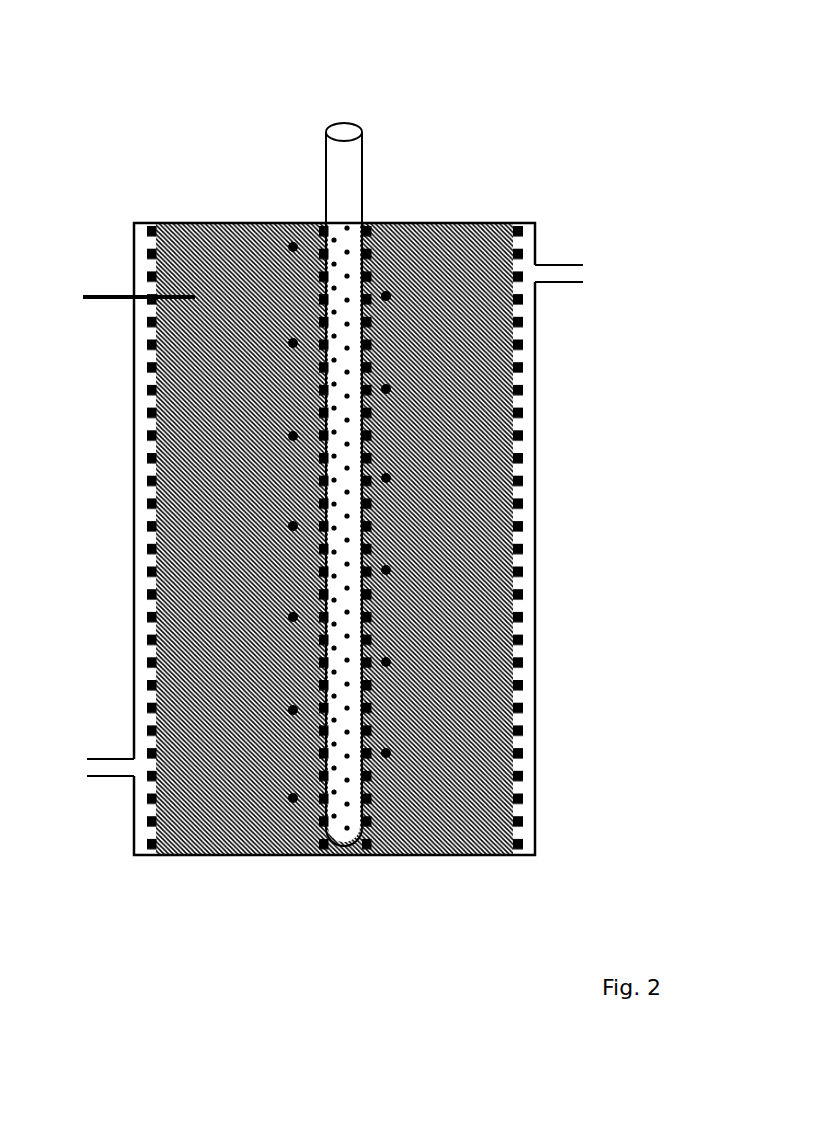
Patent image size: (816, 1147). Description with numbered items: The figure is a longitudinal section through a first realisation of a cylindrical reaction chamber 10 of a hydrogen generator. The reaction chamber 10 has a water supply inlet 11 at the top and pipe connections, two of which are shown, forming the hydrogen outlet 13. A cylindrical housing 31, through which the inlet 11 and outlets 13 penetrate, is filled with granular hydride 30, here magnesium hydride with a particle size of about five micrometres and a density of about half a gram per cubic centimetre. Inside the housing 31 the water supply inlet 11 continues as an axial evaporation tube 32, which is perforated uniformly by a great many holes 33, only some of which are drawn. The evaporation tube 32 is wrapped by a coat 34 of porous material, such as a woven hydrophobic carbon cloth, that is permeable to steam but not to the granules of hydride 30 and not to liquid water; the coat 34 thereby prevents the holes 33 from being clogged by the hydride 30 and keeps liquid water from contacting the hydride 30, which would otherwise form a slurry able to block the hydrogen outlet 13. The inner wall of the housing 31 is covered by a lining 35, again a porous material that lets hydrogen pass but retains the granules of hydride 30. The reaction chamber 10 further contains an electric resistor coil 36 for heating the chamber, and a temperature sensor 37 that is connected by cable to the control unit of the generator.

The reaction chamber 10 is at (552, 104).
The water supply inlet 11 is at (345, 153).
The hydrogen outlet 13 is at (102, 759).
The granular hydride 30 is at (215, 495).
The cylindrical housing 31 is at (536, 474).
The axial evaporation tube 32 is at (343, 738).
The holes 33 is at (347, 812).
The coat of porous material 34 is at (313, 593).
The lining 35 is at (520, 598).
The electric resistor coil 36 is at (291, 243).
The temperature sensor 37 is at (115, 296).